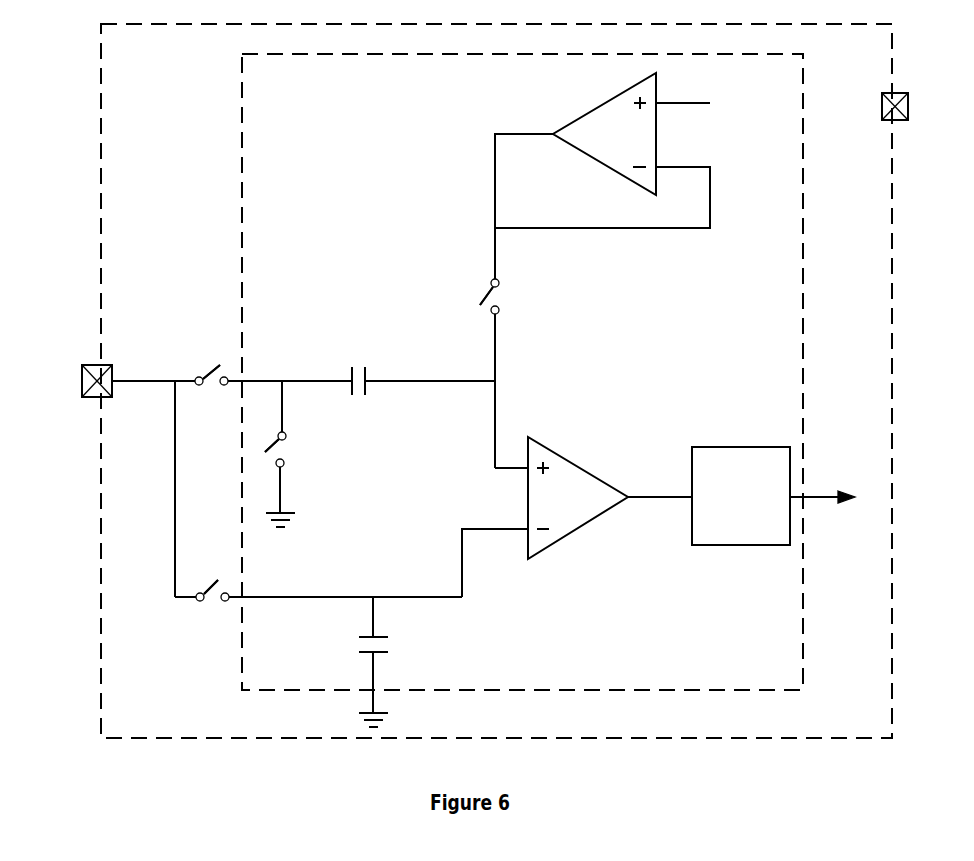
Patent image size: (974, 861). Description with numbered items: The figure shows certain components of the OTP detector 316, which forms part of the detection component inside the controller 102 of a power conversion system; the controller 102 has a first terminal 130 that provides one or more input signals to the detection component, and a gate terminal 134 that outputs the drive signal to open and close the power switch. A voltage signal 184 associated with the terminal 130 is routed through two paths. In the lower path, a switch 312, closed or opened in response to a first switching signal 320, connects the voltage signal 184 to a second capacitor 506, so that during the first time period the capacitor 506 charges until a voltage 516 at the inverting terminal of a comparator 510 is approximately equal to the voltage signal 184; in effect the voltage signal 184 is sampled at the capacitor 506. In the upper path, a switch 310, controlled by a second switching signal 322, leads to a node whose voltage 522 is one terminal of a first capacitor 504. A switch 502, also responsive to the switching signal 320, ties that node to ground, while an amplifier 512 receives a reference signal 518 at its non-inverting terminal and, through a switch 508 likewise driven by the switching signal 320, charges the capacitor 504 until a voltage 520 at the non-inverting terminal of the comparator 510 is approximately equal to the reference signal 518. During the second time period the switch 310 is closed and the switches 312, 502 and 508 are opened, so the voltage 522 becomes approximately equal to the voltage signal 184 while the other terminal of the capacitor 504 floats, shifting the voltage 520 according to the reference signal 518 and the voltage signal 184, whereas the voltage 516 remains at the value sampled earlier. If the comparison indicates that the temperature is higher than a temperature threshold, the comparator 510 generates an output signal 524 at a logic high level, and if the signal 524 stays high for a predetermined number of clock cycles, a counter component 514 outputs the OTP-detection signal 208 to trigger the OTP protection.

The controller 102 is at (892, 695).
The OTP detector 316 is at (803, 650).
The terminal 130 is at (85, 397).
The voltage signal 184 is at (133, 383).
The switch 310 is at (217, 384).
The switching signal 322 is at (213, 366).
The switching signal 320 is at (268, 448).
The voltage 522 is at (319, 381).
The switch 502 is at (286, 464).
The capacitor 504 is at (364, 368).
The voltage 520 is at (497, 381).
The switch 508 is at (500, 293).
The amplifier 512 is at (584, 113).
The reference signal 518 is at (700, 104).
The comparator 510 is at (569, 455).
The signal 524 is at (657, 499).
The counter component 514 is at (710, 447).
The OTP-detection signal 208 is at (819, 499).
The switch 312 is at (211, 599).
The voltage 516 is at (462, 597).
The capacitor 506 is at (381, 637).
The terminal 134 is at (890, 93).